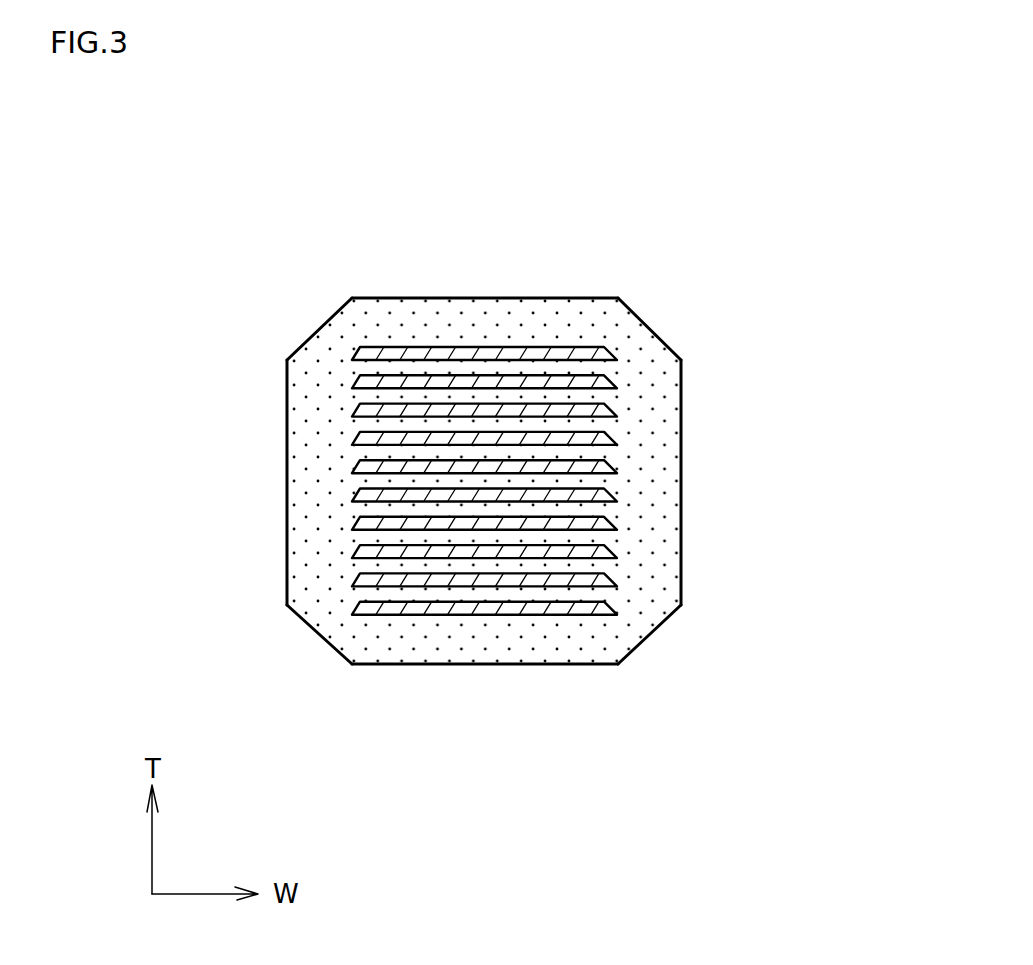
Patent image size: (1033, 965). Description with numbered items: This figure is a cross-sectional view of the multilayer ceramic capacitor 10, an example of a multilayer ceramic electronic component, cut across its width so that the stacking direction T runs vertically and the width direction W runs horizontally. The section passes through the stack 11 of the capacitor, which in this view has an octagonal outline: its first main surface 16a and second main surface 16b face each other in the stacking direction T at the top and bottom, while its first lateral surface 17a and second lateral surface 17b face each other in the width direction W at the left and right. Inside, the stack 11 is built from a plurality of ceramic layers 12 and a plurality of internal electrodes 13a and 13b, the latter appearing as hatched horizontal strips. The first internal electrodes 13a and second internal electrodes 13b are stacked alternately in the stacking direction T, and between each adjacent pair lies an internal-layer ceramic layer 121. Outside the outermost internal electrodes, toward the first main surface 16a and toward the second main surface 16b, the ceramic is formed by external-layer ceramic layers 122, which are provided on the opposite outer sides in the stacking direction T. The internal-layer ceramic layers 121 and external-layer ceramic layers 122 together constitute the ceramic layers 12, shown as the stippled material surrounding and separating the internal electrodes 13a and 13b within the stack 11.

The multilayer ceramic capacitor 10 is at (615, 225).
The stack 11 is at (483, 297).
The ceramic layers 12 is at (477, 469).
The internal-layer ceramic layer 121 is at (540, 377).
The external-layer ceramic layer 122 is at (425, 325).
The first internal electrode 13a is at (380, 348).
The second internal electrode 13b is at (417, 617).
The first main surface 16a is at (578, 298).
The second main surface 16b is at (578, 665).
The first lateral surface 17a is at (287, 448).
The second lateral surface 17b is at (683, 453).